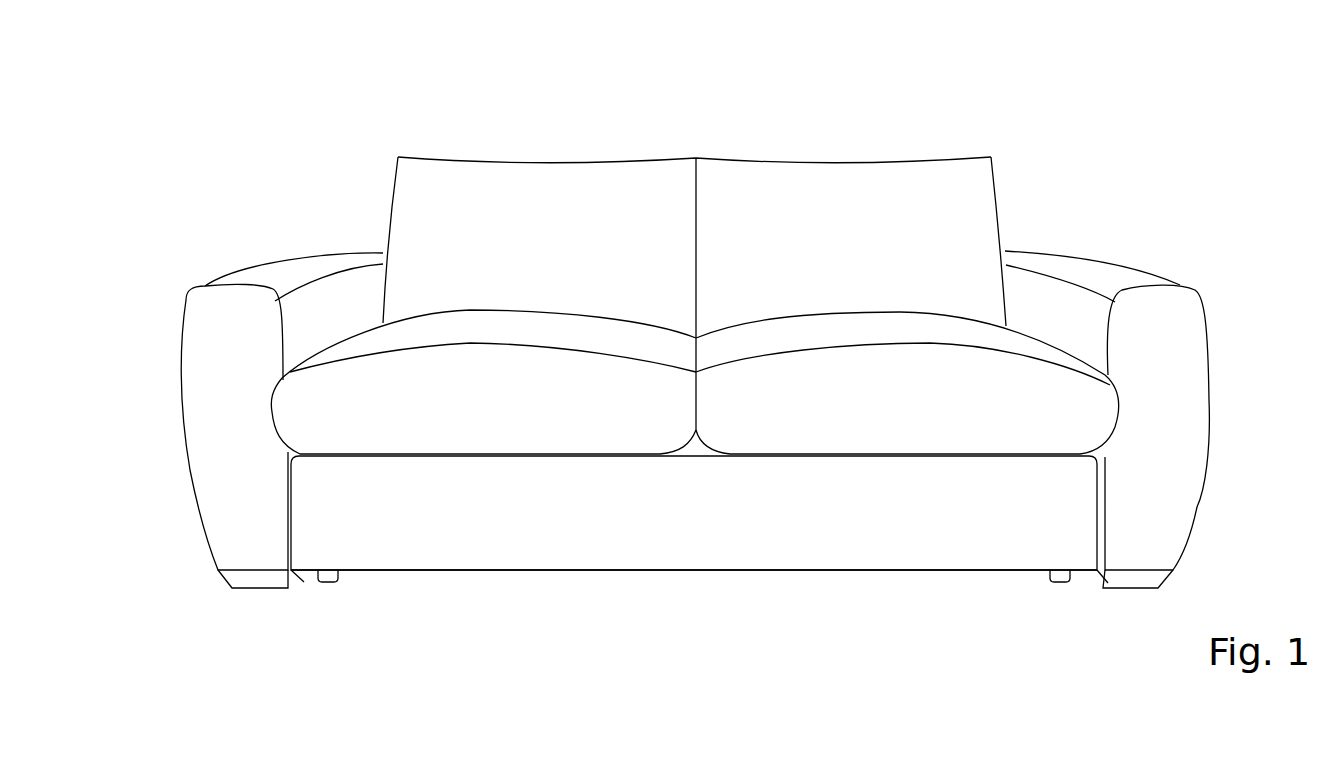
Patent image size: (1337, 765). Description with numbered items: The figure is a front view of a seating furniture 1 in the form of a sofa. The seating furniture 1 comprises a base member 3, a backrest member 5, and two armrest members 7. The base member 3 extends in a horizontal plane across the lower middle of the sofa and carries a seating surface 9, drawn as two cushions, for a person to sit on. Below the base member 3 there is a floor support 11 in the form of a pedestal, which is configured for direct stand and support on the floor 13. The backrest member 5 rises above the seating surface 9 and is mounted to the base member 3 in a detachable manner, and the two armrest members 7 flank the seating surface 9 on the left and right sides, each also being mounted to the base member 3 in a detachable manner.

The seating furniture 1 is at (212, 152).
The base member 3 is at (782, 532).
The backrest member 5 is at (563, 210).
The armrest members 7 is at (222, 432).
The seating surface 9 is at (823, 326).
The floor support 11 is at (330, 578).
The floor 13 is at (902, 588).